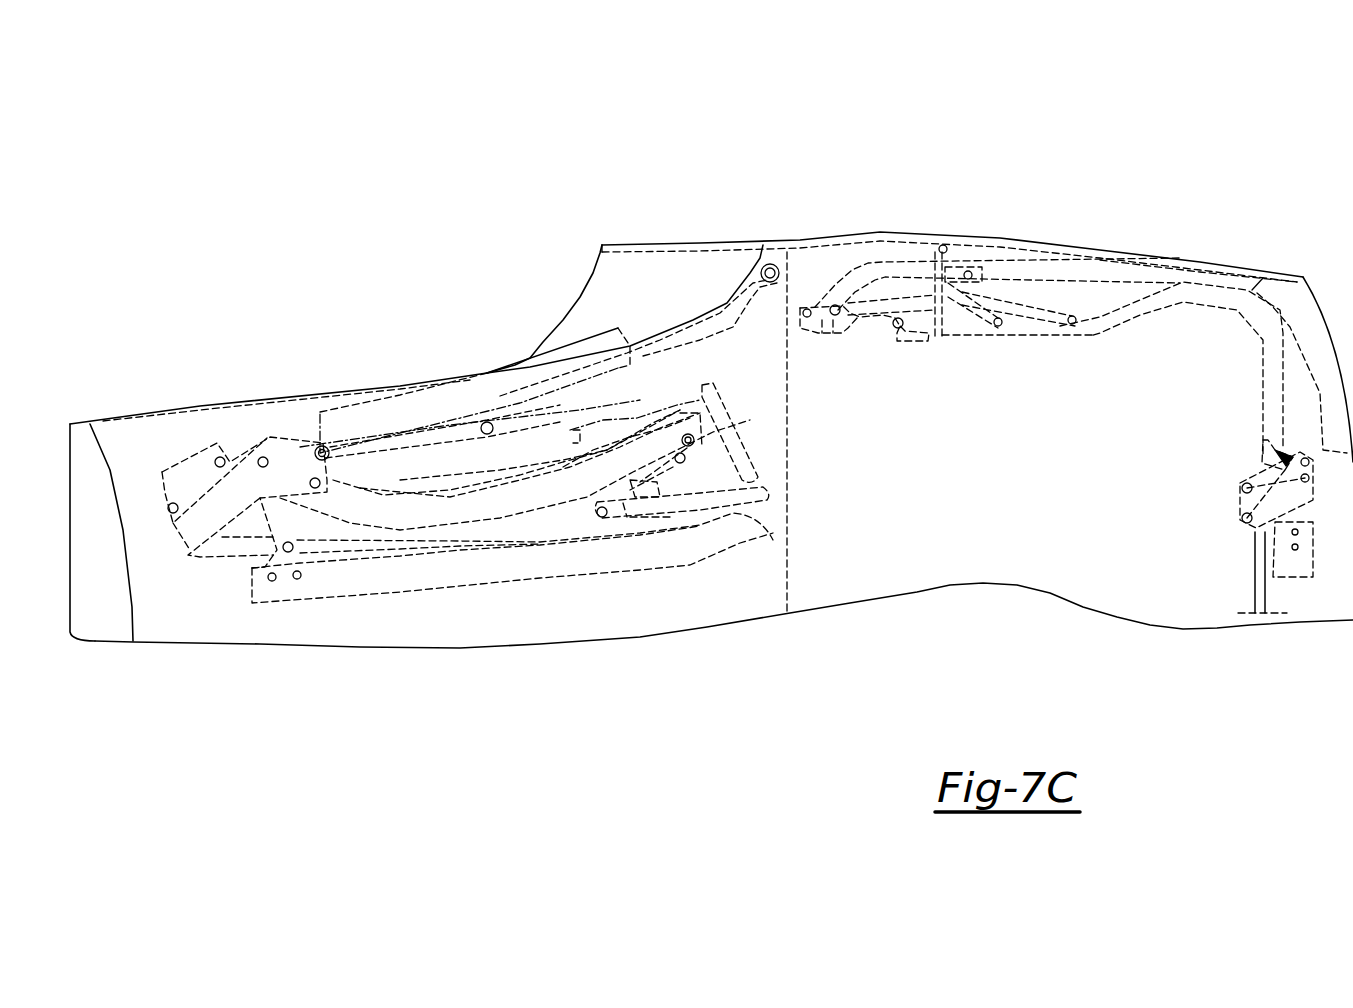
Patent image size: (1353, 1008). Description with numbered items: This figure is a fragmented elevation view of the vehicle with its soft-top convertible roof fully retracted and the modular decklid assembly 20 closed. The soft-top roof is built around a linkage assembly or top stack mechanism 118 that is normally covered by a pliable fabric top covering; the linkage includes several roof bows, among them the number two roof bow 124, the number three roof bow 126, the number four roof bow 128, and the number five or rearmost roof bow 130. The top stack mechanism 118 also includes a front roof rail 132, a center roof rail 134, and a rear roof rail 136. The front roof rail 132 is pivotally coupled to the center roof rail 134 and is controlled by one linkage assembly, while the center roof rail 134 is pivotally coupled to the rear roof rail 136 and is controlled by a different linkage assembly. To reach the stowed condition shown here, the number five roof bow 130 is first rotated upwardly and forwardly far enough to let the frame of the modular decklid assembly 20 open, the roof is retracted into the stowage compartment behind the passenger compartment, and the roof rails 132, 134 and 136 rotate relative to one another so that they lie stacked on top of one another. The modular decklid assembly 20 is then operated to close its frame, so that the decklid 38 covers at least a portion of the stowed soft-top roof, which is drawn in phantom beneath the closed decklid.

The modular decklid assembly 20 is at (1010, 166).
The decklid 38 is at (1176, 258).
The top stack mechanism 118 is at (392, 278).
The number two roof bow 124 is at (735, 418).
The number three roof bow 126 is at (768, 490).
The number four roof bow 128 is at (352, 548).
The number five roof bow 130 is at (745, 520).
The front roof rail 132 is at (400, 405).
The center roof rail 134 is at (540, 447).
The rear roof rail 136 is at (500, 510).